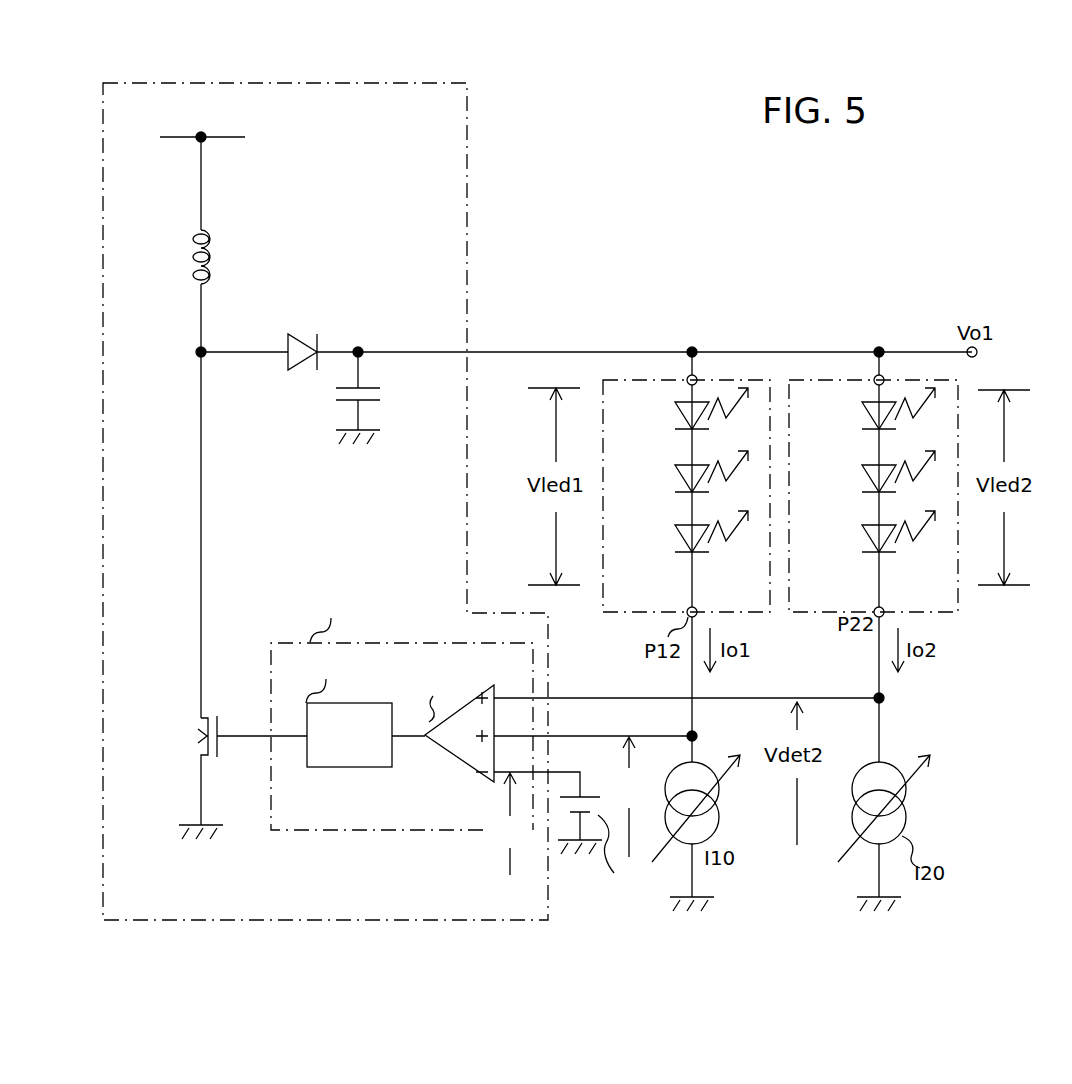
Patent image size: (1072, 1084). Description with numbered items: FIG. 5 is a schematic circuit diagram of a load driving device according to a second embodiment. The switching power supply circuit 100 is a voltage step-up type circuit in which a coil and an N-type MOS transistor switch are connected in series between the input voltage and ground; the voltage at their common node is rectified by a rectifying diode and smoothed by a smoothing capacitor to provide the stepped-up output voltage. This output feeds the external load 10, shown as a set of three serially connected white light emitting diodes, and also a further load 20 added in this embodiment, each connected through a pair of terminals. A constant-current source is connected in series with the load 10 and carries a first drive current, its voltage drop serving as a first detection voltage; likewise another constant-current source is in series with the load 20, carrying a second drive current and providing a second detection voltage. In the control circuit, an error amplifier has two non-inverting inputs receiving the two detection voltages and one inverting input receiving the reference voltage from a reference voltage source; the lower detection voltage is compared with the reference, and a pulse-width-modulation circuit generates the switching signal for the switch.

The switching power supply circuit 100 is at (470, 168).
The external load 10 is at (617, 612).
The further load 20 is at (955, 612).